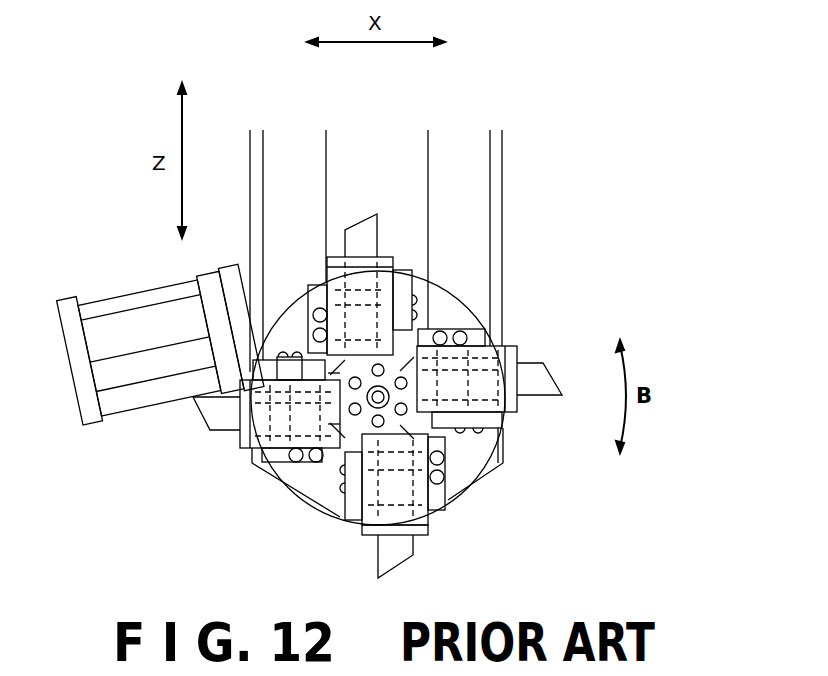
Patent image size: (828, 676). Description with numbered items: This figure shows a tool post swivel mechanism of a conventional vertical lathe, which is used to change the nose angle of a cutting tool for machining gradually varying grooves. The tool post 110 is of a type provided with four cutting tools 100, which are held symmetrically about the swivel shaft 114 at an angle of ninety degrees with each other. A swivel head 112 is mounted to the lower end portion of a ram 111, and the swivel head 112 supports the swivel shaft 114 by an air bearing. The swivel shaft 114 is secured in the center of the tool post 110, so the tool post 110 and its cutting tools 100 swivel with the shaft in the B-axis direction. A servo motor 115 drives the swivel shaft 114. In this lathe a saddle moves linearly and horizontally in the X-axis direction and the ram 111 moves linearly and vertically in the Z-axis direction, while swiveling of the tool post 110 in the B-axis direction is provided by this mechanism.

The cutting tool 100 is at (533, 373).
The tool post 110 is at (447, 312).
The ram 111 is at (477, 168).
The swivel head 112 is at (446, 280).
The swivel shaft 114 is at (375, 402).
The servo motor 115 is at (130, 398).